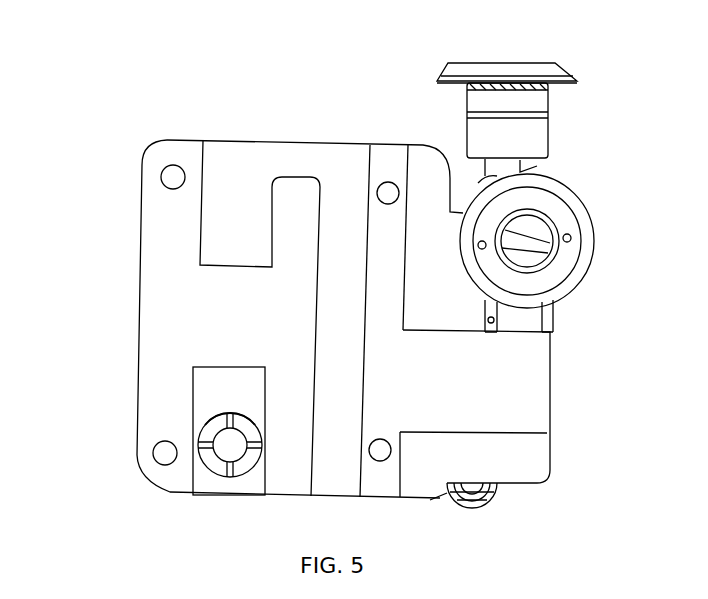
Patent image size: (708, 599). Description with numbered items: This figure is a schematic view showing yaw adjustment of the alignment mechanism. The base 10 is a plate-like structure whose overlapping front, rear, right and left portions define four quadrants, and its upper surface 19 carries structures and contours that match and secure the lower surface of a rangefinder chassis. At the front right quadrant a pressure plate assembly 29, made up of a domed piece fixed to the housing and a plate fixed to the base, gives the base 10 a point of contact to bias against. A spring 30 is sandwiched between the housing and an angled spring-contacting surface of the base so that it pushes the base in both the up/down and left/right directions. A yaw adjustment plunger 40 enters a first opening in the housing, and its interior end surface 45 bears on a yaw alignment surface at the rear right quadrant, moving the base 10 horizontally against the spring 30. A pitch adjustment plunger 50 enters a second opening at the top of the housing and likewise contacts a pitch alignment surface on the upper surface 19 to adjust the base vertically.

The base 10 is at (100, 277).
The upper surface 19 is at (252, 170).
The pressure plate assembly 29 is at (230, 445).
The spring 30 is at (497, 505).
The yaw adjustment plunger 40 is at (555, 70).
The interior end surface 45 is at (520, 169).
The pitch adjustment plunger 50 is at (548, 213).